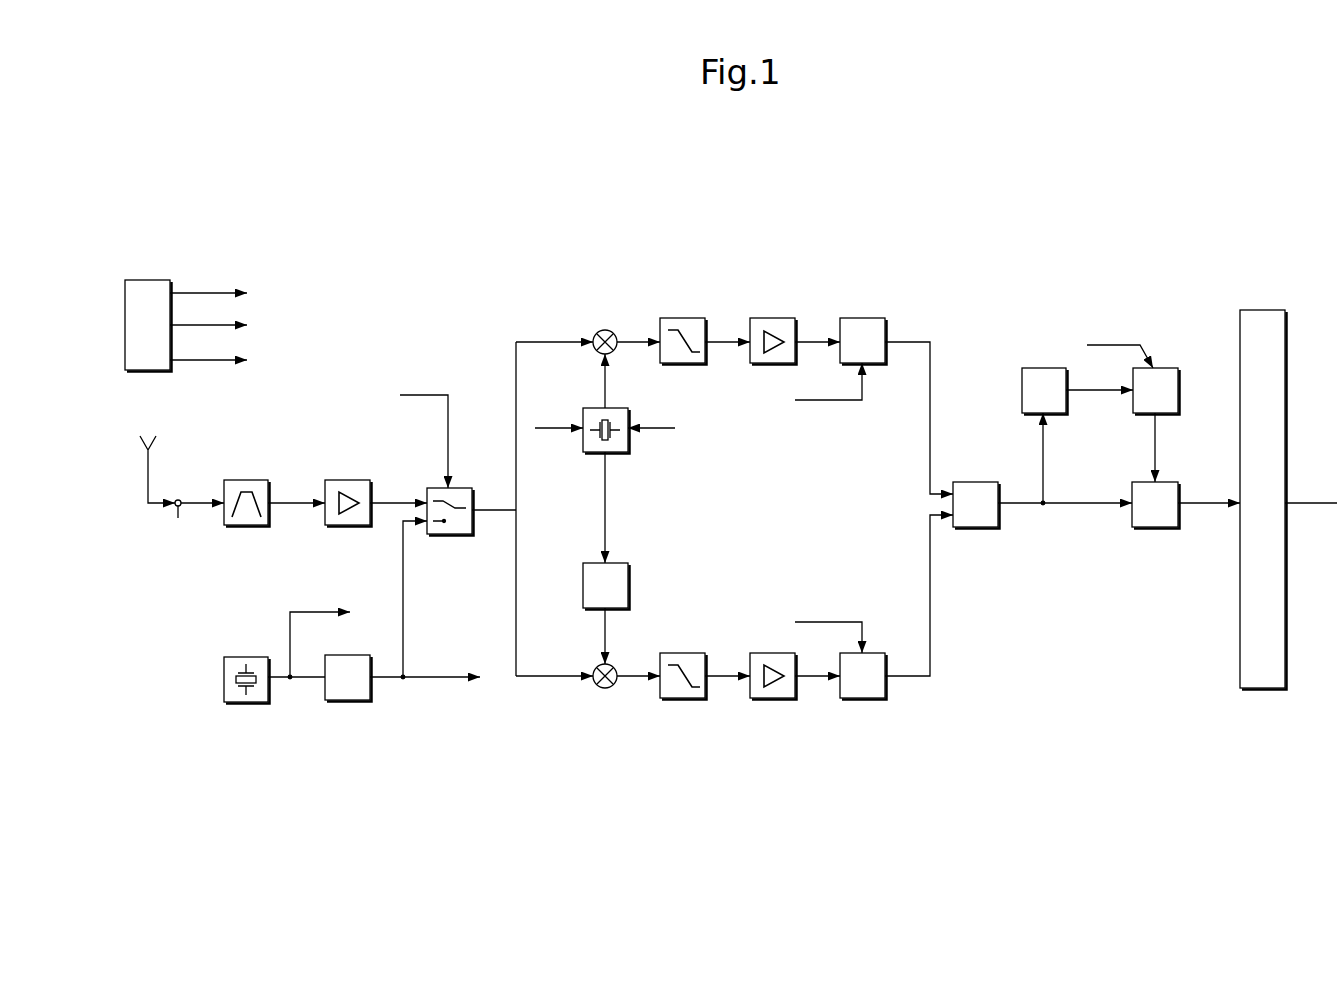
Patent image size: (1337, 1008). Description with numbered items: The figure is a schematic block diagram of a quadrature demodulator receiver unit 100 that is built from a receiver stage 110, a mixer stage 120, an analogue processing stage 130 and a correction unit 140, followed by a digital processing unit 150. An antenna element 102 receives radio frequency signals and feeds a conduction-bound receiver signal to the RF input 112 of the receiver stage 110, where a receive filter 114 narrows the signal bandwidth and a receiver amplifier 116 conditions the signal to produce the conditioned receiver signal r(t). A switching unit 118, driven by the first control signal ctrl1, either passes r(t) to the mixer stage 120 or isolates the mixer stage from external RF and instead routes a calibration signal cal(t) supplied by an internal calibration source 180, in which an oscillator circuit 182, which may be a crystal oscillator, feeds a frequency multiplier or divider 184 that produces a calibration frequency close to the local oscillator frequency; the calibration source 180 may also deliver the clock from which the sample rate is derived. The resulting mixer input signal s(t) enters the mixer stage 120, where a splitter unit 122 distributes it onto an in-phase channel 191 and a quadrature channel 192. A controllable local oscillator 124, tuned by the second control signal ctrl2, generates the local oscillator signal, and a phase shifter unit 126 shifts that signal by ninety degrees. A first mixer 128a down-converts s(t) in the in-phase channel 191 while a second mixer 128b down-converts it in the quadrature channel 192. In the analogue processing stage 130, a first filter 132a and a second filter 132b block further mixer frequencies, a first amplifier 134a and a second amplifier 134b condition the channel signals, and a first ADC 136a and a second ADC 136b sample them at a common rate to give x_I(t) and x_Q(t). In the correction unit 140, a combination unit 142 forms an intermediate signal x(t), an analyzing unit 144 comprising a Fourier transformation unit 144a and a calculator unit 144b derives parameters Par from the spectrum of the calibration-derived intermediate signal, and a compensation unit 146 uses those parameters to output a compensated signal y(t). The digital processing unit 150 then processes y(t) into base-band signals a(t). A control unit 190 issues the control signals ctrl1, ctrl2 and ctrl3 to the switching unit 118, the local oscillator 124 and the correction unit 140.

The quadrature demodulator receiver unit 100 is at (1244, 222).
The antenna element 102 is at (140, 437).
The receiver stage 110 is at (178, 221).
The RF input 112 is at (188, 539).
The receive filter 114 is at (246, 480).
The receiver amplifier 116 is at (340, 480).
The switching unit 118 is at (446, 486).
The mixer stage 120 is at (628, 221).
The splitter unit 122 is at (580, 507).
The controllable local oscillator 124 is at (631, 444).
The phase shifter unit 126 is at (631, 586).
The first mixer 128a is at (600, 330).
The second mixer 128b is at (600, 690).
The analogue processing stage 130 is at (852, 221).
The first filter 132a is at (686, 318).
The second filter 132b is at (686, 698).
The first amplifier 134a is at (776, 318).
The second amplifier 134b is at (776, 698).
The first ADC 136a is at (868, 318).
The second ADC 136b is at (868, 698).
The correction unit 140 is at (953, 217).
The combination unit 142 is at (975, 530).
The analyzing unit 144 is at (1116, 379).
The Fourier transformation unit 144a is at (1042, 368).
The calculator unit 144b is at (1182, 394).
The compensation unit 146 is at (1155, 530).
The digital processing unit 150 is at (1265, 310).
The internal calibration source 180 is at (200, 790).
The oscillator circuit 182 is at (244, 704).
The frequency multiplier or divider 184 is at (348, 702).
The control unit 190 is at (147, 280).
The in-phase channel 191 is at (498, 338).
The quadrature channel 192 is at (498, 690).